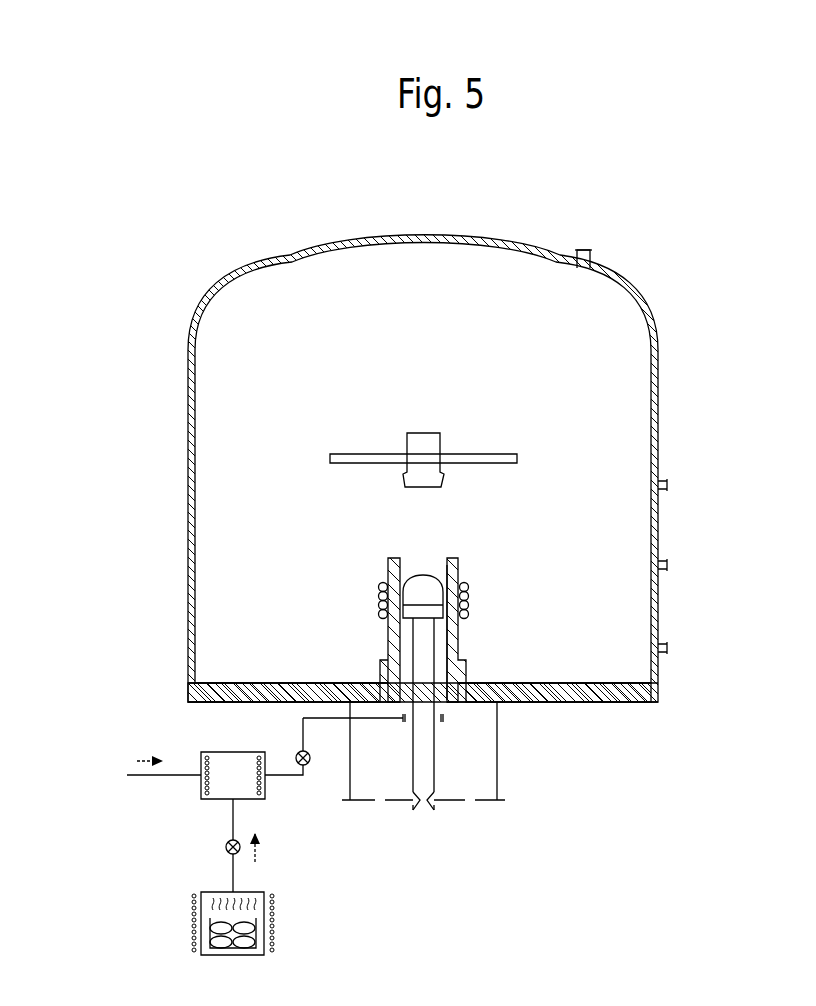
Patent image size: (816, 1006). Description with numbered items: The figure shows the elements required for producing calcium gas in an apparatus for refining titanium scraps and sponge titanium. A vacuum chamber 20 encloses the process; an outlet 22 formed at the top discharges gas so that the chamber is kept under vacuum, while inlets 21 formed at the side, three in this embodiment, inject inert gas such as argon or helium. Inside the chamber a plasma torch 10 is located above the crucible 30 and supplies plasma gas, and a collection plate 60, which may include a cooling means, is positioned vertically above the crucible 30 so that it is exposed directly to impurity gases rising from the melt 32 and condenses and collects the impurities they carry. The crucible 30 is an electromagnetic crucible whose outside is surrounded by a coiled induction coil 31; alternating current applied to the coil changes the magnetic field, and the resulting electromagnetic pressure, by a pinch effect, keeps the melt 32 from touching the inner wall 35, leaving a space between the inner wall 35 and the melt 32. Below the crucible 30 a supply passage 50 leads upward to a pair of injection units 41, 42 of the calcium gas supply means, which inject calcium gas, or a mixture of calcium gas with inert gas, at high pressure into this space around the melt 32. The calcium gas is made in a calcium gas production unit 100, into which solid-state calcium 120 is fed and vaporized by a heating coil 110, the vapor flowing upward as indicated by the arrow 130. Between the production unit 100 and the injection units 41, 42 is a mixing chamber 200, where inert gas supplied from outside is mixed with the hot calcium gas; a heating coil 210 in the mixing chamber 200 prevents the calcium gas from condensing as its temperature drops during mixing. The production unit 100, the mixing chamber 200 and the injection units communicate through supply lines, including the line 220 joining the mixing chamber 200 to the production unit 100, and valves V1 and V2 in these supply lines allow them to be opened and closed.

The vacuum chamber 20 is at (218, 272).
The outlet 22 is at (581, 249).
The inlet 21 is at (669, 648).
The plasma torch 10 is at (413, 446).
The collection plate 60 is at (484, 454).
The crucible 30 is at (382, 551).
The induction coil 31 is at (378, 605).
The melt 32 is at (424, 586).
The inner wall 35 is at (459, 640).
The supply tube 50 is at (428, 662).
The injection unit 41 is at (403, 719).
The injection unit 42 is at (444, 718).
The mixing chamber 200 is at (195, 745).
The heating coil 210 is at (203, 784).
The connection pipe 220 is at (217, 800).
The vapor flow direction 130 is at (283, 854).
The calcium gas production unit 100 is at (193, 888).
The vaporizer heater coil 110 is at (192, 927).
The solid-state calcium 120 is at (210, 950).
The valve V1 is at (226, 847).
The valve V2 is at (305, 768).